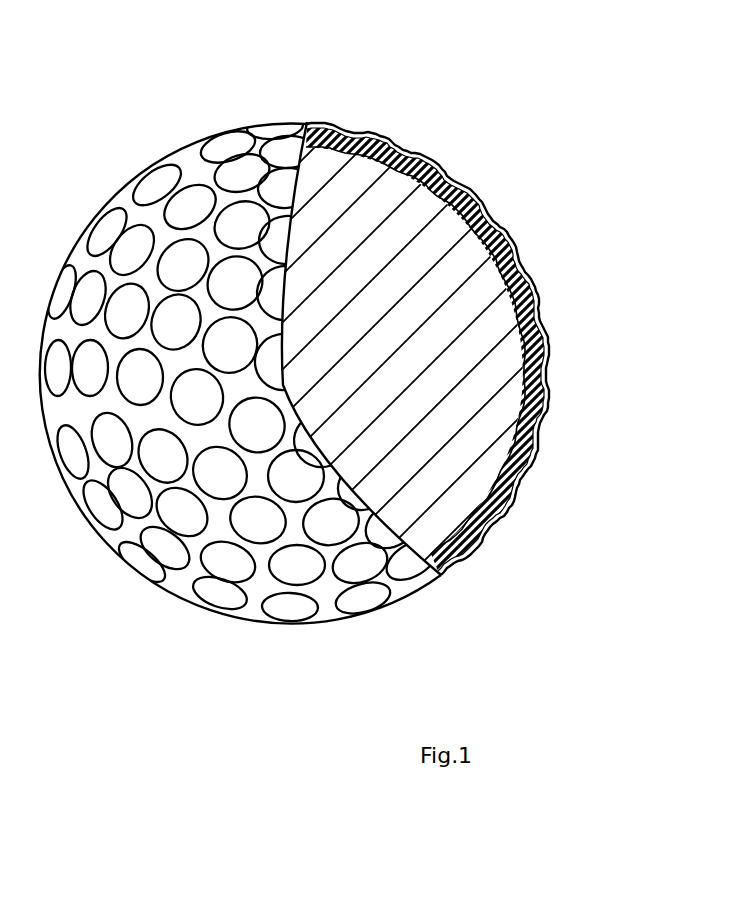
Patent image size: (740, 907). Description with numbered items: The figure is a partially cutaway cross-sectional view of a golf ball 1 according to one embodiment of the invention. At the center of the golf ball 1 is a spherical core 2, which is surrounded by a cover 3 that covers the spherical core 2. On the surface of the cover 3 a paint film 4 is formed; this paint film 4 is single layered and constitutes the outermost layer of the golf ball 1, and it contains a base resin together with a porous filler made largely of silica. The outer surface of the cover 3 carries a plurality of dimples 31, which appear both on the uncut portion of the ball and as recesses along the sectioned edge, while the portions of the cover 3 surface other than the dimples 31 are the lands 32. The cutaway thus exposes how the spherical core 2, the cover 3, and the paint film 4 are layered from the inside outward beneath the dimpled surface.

The golf ball 1 is at (478, 192).
The spherical core 2 is at (480, 293).
The cover 3 is at (540, 305).
The paint film 4 is at (548, 382).
The dimples 31 is at (348, 130).
The lands 32 is at (385, 130).